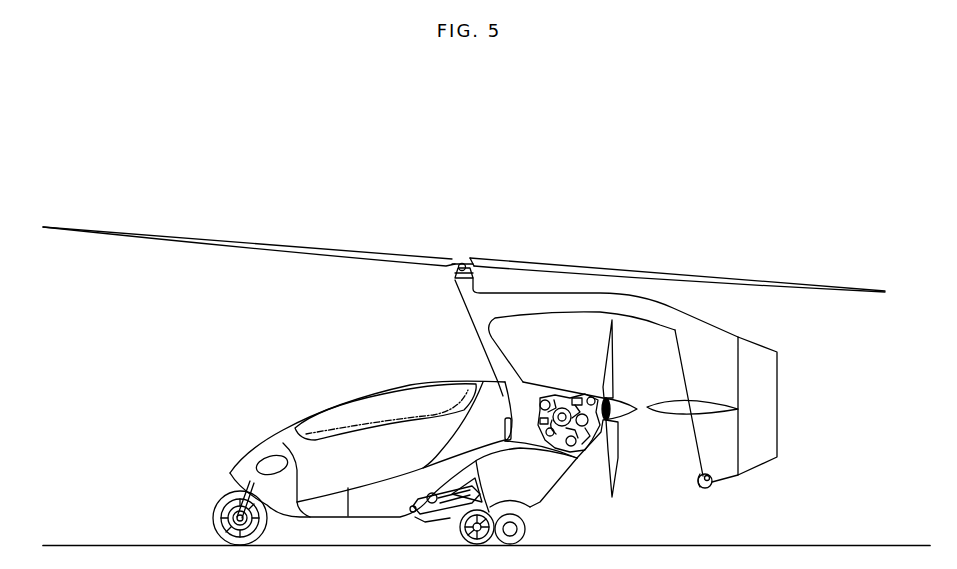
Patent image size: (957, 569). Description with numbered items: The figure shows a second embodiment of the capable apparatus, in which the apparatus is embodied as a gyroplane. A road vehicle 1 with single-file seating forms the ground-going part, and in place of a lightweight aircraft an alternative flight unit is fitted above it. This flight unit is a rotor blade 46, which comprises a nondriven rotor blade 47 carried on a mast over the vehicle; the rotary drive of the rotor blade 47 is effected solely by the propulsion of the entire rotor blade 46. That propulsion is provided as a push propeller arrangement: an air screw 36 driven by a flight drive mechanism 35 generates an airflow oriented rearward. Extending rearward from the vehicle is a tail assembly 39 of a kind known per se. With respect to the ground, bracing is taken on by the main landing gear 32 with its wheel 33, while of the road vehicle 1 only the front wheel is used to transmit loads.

The road vehicle 1 is at (365, 364).
The main landing gear 32 is at (524, 512).
The wheel 33 is at (523, 531).
The flight drive mechanism 35 is at (560, 393).
The air screw 36 is at (614, 372).
The tail assembly 39 is at (797, 367).
The rotor blade 46 is at (475, 216).
The nondriven rotor blade 47 is at (658, 271).